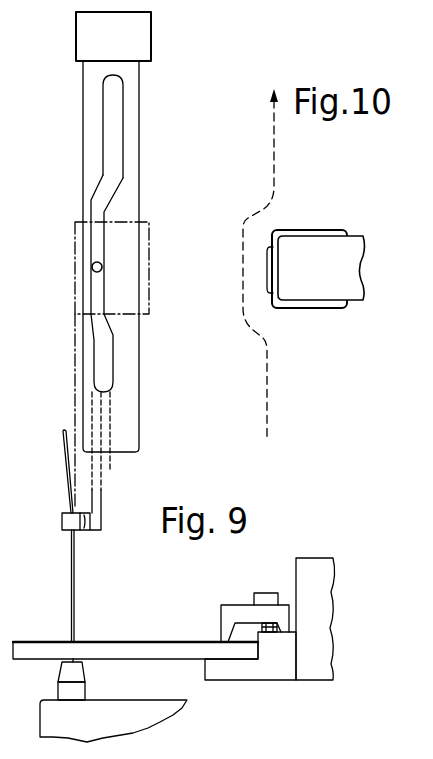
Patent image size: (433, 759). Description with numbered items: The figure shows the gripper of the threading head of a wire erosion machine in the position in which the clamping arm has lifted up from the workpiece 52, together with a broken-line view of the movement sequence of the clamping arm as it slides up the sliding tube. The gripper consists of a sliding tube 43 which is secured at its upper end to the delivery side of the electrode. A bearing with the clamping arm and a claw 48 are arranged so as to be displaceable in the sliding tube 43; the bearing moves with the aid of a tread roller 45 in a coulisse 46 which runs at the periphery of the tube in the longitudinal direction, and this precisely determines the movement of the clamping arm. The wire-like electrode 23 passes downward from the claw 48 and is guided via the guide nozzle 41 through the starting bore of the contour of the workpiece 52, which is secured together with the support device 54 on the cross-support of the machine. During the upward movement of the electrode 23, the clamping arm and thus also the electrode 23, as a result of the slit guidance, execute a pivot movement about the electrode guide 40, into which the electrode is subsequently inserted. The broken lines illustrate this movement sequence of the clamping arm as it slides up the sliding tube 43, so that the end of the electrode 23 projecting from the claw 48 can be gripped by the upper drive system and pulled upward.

In FIG. 9, the wire-like electrode 23 is at (71, 591).
In FIG. 10, the electrode guide 40 is at (267, 270).
In FIG. 9, the guide nozzle 41 is at (70, 672).
In FIG. 9, the sliding tube 43 is at (127, 406).
In FIG. 9, the tread roller 45 is at (102, 267).
In FIG. 9, the coulisse 46 is at (112, 103).
In FIG. 9, the claw 48 is at (62, 521).
In FIG. 9, the workpiece 52 is at (125, 660).
In FIG. 9, the support device 54 is at (235, 613).